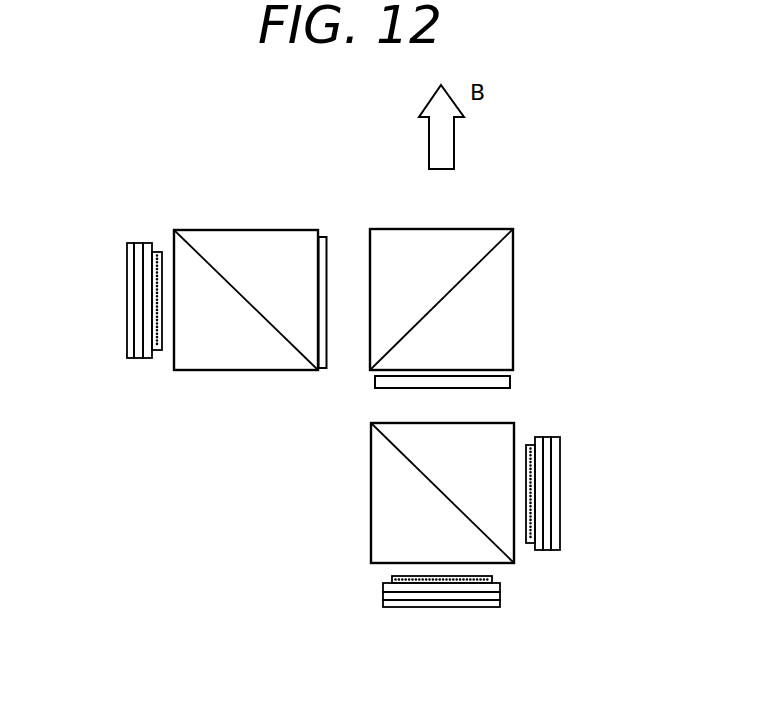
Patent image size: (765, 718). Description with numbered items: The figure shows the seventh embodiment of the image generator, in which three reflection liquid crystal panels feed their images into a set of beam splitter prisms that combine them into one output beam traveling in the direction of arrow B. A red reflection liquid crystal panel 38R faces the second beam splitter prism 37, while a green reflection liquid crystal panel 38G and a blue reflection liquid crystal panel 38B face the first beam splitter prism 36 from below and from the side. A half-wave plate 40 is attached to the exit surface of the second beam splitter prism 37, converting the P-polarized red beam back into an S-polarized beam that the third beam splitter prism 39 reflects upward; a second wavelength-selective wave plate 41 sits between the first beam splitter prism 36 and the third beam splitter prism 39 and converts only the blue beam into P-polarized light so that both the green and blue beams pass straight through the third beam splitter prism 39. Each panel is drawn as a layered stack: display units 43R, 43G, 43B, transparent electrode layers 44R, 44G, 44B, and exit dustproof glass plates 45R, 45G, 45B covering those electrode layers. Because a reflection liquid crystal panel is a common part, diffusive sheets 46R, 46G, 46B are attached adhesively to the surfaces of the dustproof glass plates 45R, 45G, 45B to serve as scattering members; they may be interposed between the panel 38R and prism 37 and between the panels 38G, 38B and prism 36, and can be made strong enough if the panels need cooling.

The first beam splitter prism 36 is at (377, 468).
The second beam splitter prism 37 is at (217, 237).
The third beam splitter prism 39 is at (502, 272).
The half-wave plate 40 is at (323, 237).
The second wavelength-selective wave plate 41 is at (507, 382).
The red reflection liquid crystal panel 38R is at (145, 300).
The green reflection liquid crystal panel 38G is at (407, 608).
The blue reflection liquid crystal panel 38B is at (613, 550).
The display unit 43R is at (128, 360).
The transparent electrode layer 44R is at (137, 360).
The dustproof glass plate 45R is at (147, 360).
The diffusive sheet 46R is at (156, 352).
The display unit 43G is at (383, 603).
The transparent electrode layer 44G is at (383, 597).
The dustproof glass plate 45G is at (383, 588).
The diffusive sheet 46G is at (392, 580).
The display unit 43B is at (560, 550).
The transparent electrode layer 44B is at (550, 552).
The dustproof glass plate 45B is at (543, 552).
The diffusive sheet 46B is at (535, 552).